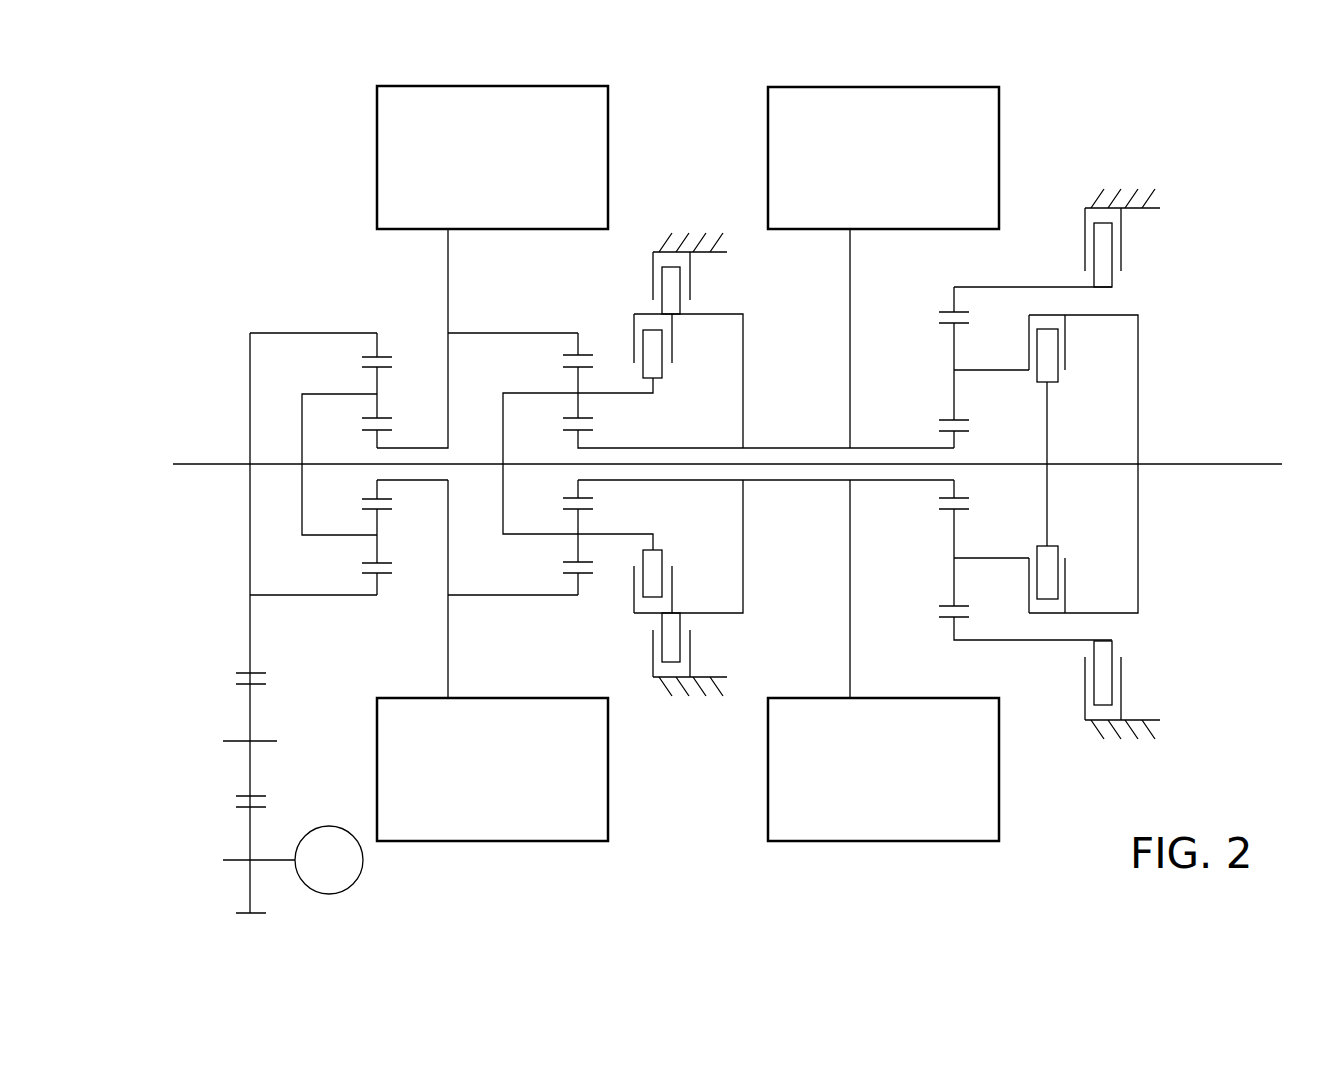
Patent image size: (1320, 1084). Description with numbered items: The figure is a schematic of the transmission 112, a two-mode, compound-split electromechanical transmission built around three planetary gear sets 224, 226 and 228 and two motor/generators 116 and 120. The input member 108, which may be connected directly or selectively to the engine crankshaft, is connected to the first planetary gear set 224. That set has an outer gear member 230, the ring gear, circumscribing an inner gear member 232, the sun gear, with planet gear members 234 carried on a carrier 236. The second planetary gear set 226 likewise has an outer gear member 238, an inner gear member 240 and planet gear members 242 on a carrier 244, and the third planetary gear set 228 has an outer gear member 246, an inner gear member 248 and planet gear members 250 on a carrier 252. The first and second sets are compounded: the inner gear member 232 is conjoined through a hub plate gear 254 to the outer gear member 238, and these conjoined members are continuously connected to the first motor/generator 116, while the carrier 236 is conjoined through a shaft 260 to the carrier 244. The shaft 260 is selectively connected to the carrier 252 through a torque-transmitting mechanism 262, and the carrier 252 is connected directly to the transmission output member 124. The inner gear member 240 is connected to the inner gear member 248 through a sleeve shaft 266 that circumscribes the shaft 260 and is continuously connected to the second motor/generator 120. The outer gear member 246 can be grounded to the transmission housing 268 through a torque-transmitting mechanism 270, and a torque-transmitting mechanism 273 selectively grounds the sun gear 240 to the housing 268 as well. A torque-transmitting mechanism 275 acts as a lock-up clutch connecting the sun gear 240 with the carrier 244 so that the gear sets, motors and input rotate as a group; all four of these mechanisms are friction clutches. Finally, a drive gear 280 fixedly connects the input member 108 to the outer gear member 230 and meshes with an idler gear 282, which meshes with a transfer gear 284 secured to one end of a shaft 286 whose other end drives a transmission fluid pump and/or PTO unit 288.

The transmission 112 is at (220, 168).
The input member 108 is at (197, 462).
The transmission output member 124 is at (1212, 466).
The first motor/generator 116 is at (492, 463).
The second motor/generator 120 is at (883, 464).
The first planetary gear set 224 is at (345, 308).
The second planetary gear set 226 is at (545, 312).
The third planetary gear set 228 is at (945, 290).
The outer gear member 230 is at (387, 353).
The inner gear member 232 is at (392, 436).
The planet gear members 234 is at (375, 378).
The carrier 236 is at (302, 502).
The outer gear member 238 is at (590, 353).
The inner gear member 240 is at (582, 437).
The planet gear members 242 is at (575, 380).
The carrier 244 is at (503, 498).
The outer gear member 246 is at (948, 312).
The inner gear member 248 is at (953, 433).
The planet gear members 250 is at (950, 350).
The carrier 252 is at (1140, 368).
The hub plate gear 254 is at (450, 428).
The shaft 260 is at (807, 467).
The torque-transmitting mechanism 262 is at (1066, 374).
The sleeve shaft 266 is at (778, 447).
The transmission housing 268 is at (663, 247).
The torque-transmitting mechanism 270 is at (1070, 230).
The torque-transmitting mechanism 273 is at (696, 284).
The torque-transmitting mechanism 275 is at (670, 378).
The drive gear 280 is at (250, 534).
The idler gear 282 is at (250, 713).
The transfer gear 284 is at (250, 833).
The shaft 286 is at (278, 862).
The transmission fluid pump and/or PTO unit 288 is at (345, 890).